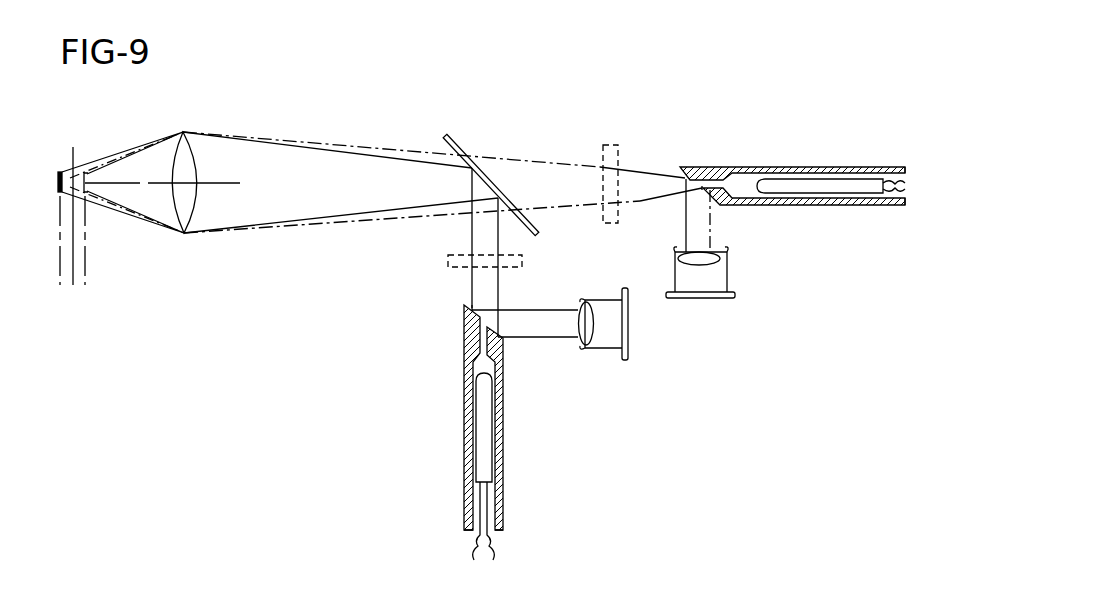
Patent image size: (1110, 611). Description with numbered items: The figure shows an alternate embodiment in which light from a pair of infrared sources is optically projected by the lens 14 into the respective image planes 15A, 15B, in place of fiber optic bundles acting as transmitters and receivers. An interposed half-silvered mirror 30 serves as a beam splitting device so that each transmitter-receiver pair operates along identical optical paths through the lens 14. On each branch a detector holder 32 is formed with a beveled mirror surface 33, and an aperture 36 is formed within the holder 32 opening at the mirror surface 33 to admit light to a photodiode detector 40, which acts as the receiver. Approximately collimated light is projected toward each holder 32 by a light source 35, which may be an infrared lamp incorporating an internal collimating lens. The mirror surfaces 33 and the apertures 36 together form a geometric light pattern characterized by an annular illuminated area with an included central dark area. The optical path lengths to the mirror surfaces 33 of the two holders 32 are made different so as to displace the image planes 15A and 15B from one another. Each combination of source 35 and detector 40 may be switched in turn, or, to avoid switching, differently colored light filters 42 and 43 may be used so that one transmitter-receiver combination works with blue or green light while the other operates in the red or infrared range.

The lens 14 is at (188, 150).
The image plane 15A is at (57, 180).
The image plane 15B is at (82, 182).
The half-silvered mirror 30 is at (455, 143).
The detector holder 32 is at (502, 408).
The beveled mirror surface 33 is at (472, 308).
The light source 35 is at (698, 283).
The aperture 36 is at (478, 337).
The photodiode detector 40 is at (483, 445).
The colored light filter 42 is at (445, 262).
The colored light filter 43 is at (607, 143).